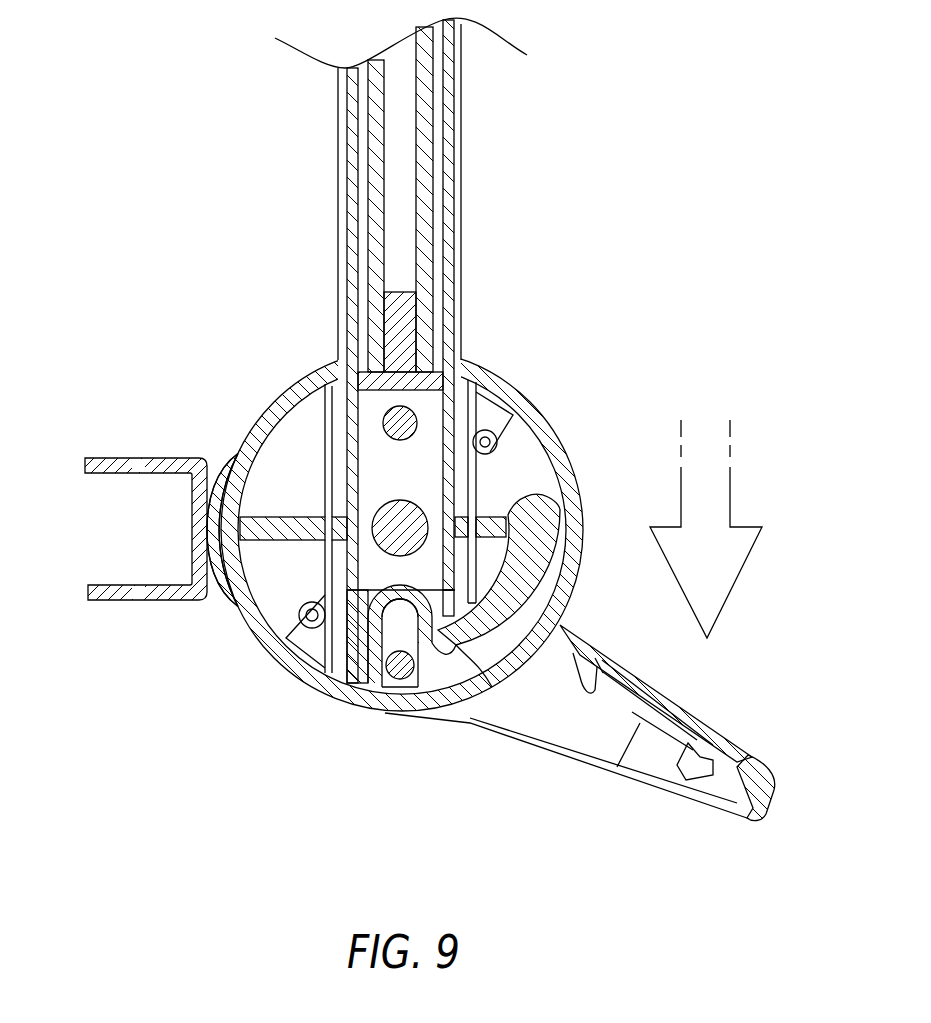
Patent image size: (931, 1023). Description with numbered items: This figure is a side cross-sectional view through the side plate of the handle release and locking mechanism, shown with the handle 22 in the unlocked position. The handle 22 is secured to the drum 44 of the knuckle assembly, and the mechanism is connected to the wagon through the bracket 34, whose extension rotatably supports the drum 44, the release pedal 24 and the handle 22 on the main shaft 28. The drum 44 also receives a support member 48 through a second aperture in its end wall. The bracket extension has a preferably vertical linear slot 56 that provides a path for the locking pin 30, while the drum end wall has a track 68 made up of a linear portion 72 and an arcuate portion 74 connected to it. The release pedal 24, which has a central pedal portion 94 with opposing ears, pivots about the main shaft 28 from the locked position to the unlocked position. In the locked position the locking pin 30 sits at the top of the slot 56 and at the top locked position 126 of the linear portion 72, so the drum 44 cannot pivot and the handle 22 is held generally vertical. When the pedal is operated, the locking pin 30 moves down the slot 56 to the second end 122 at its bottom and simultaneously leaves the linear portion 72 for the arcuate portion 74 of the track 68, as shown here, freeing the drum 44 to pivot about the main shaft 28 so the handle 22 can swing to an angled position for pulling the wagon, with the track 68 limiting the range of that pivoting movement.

The handle 22 is at (461, 135).
The release pedal 24 is at (667, 787).
The main shaft 28 is at (388, 513).
The locking pin 30 is at (400, 672).
The bracket 34 is at (100, 457).
The drum 44 is at (548, 412).
The support member 48 is at (407, 408).
The linear slot 56 is at (397, 638).
The track 68 is at (483, 637).
The linear portion 72 is at (410, 638).
The arcuate portion 74 is at (540, 545).
The central pedal portion 94 is at (723, 733).
The second end 122 is at (388, 680).
The top locked position 126 is at (397, 619).